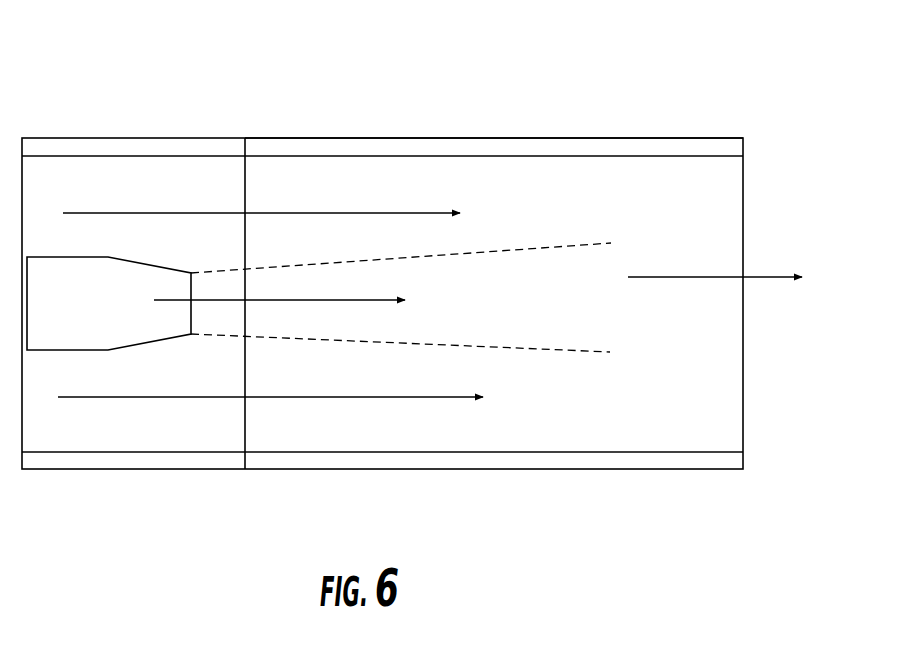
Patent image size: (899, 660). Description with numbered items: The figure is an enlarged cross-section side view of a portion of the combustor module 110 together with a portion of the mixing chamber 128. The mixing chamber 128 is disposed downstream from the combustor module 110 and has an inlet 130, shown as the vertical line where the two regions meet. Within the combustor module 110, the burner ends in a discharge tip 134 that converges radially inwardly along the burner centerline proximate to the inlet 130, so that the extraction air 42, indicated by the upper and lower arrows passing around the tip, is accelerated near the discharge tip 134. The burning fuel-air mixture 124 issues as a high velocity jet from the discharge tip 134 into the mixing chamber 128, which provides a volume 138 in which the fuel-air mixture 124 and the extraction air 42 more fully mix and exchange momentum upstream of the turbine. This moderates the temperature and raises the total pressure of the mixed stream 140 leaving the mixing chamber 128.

The combustor module 110 is at (163, 136).
The mixing chamber 128 is at (443, 137).
The inlet 130 is at (247, 185).
The extraction air 42 is at (129, 213).
The burning fuel-air mixture 124 is at (317, 300).
The discharge tip 134 is at (144, 346).
The volume 138 is at (573, 302).
The mixed stream 140 is at (672, 277).